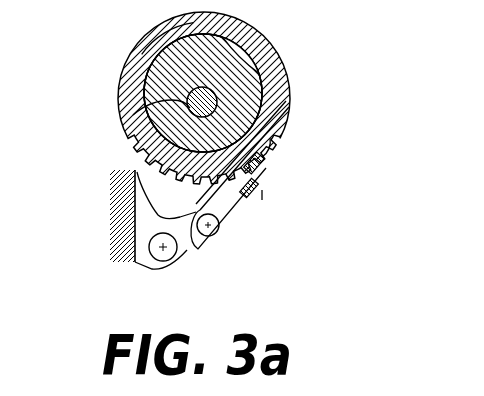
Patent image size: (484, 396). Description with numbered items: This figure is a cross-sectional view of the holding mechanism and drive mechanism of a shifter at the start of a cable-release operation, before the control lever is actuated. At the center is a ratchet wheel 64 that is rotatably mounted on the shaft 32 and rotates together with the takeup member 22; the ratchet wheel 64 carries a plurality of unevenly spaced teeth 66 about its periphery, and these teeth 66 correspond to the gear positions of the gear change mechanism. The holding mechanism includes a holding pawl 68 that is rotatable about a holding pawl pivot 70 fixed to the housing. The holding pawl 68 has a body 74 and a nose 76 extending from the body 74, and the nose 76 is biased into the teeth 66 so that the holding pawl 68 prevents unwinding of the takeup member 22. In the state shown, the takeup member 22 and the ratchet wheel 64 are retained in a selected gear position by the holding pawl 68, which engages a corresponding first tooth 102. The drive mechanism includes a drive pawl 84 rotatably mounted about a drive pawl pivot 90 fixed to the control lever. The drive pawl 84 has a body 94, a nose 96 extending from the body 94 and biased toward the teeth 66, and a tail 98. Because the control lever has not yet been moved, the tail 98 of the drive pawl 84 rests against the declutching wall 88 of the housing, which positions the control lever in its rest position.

The takeup member 22 is at (266, 65).
The shaft 32 is at (133, 116).
The ratchet wheel 64 is at (121, 76).
The teeth 66 is at (138, 162).
The holding pawl 68 is at (272, 188).
The holding pawl pivot 70 is at (214, 235).
The body 74 is at (266, 166).
The nose 76 is at (266, 156).
The drive pawl 84 is at (201, 253).
The declutching wall 88 is at (122, 223).
The drive pawl pivot 90 is at (162, 264).
The body 94 is at (189, 252).
The nose 96 is at (262, 192).
The tail 98 is at (137, 207).
The first tooth 102 is at (291, 135).